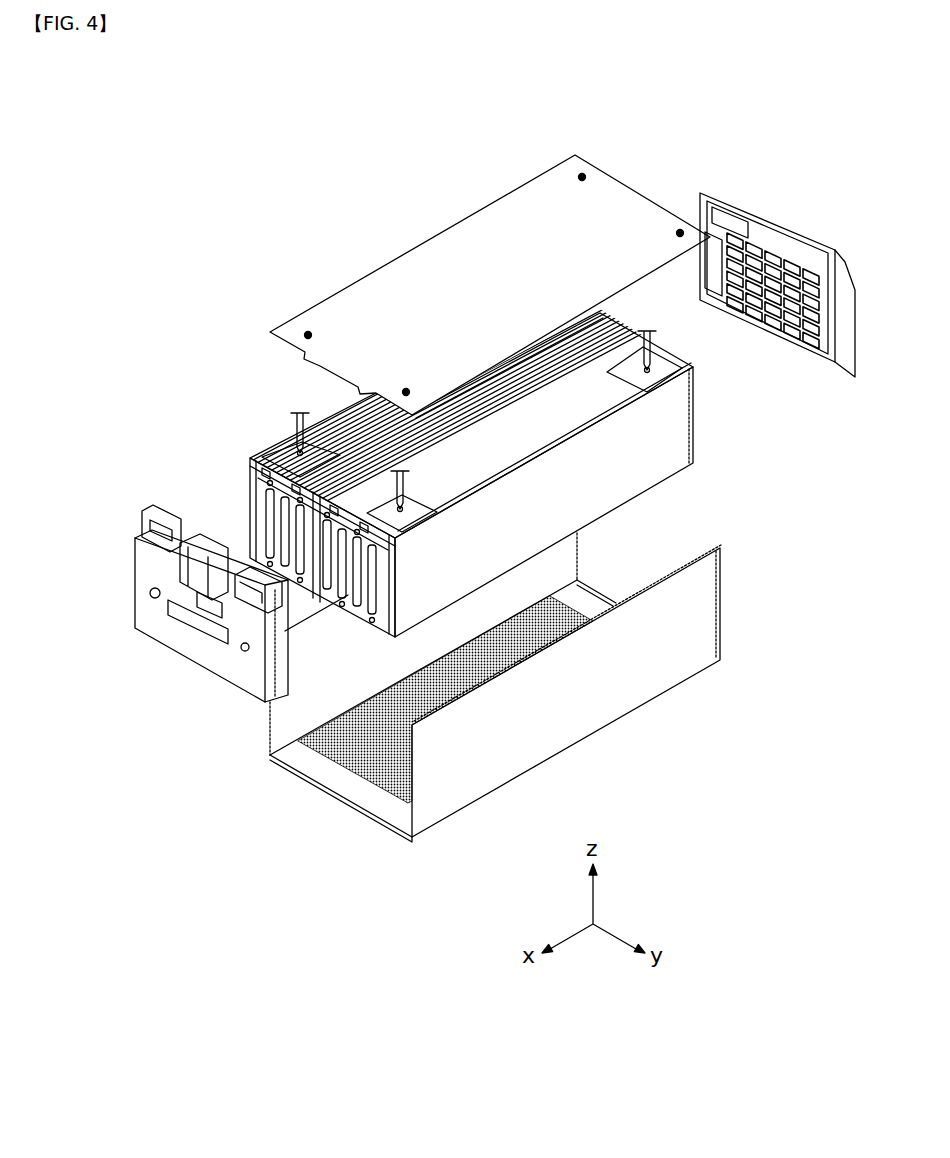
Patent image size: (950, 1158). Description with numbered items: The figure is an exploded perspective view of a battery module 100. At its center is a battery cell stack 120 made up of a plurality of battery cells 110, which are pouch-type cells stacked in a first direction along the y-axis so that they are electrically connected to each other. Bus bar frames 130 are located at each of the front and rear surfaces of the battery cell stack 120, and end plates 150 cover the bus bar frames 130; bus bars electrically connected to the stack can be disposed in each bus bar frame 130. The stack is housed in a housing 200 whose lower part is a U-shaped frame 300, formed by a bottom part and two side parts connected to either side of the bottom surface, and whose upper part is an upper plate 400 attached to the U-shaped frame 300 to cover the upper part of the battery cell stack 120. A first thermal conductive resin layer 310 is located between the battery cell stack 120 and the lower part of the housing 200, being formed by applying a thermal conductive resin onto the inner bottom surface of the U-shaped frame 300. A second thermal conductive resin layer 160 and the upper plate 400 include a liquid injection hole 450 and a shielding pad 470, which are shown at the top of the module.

The battery module 100 is at (452, 81).
The battery cells 110 is at (610, 478).
The battery cell stack 120 is at (350, 424).
The bus bar frames 130 is at (244, 512).
The end plates 150 is at (717, 194).
The second thermal conductive resin layer 160 is at (300, 448).
The housing 200 is at (787, 879).
The U-shaped frame 300 is at (597, 700).
The first thermal conductive resin layer 310 is at (368, 757).
The upper plate 400 is at (435, 263).
The liquid injection hole 450 is at (680, 233).
The shielding pad 470 is at (262, 461).